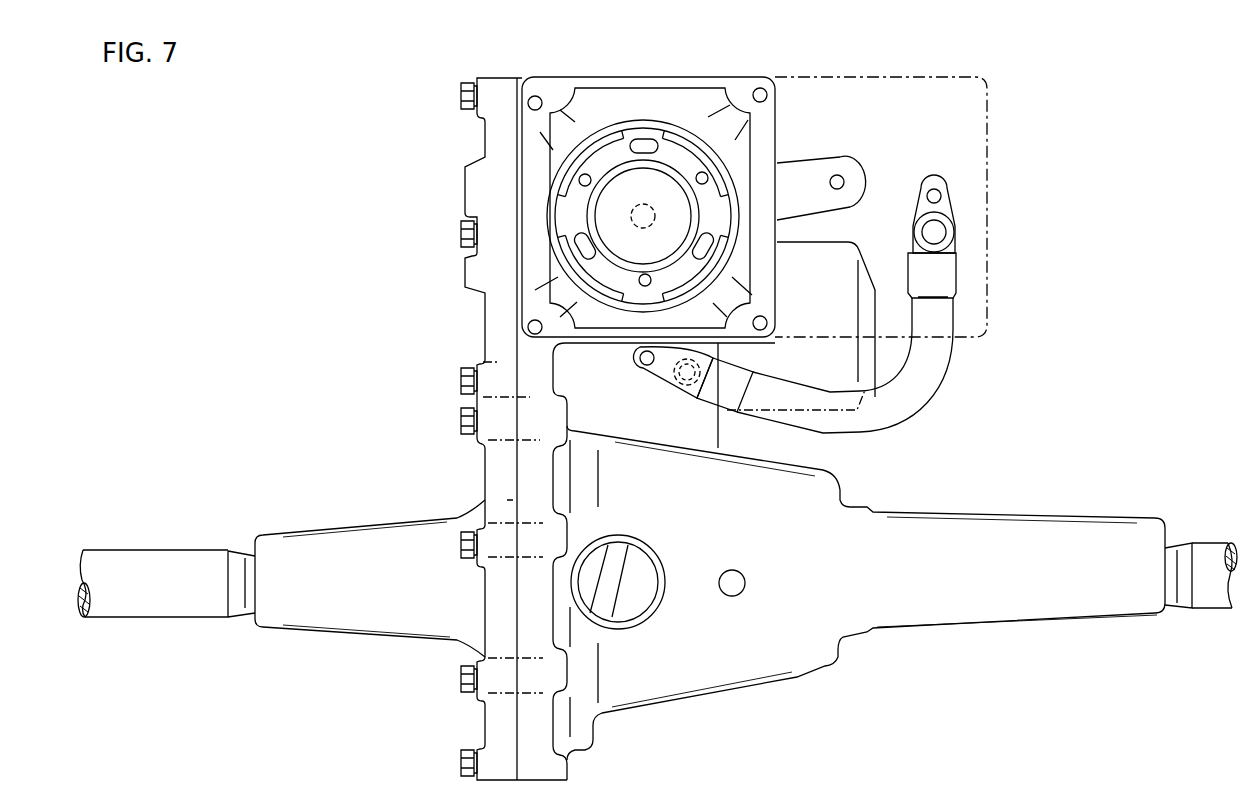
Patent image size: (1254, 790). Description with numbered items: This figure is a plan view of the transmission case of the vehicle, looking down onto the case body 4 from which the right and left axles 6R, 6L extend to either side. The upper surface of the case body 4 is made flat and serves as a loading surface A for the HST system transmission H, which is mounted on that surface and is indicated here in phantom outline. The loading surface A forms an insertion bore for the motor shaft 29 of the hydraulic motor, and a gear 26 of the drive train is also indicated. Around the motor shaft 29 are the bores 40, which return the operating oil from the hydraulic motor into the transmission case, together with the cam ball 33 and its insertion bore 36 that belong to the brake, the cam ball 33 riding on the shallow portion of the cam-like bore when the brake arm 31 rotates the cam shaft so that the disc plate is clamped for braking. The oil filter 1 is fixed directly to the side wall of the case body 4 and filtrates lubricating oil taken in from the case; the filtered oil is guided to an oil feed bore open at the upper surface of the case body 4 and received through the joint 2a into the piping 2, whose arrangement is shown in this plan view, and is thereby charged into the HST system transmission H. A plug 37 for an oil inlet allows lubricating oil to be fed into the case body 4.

The loading surface A is at (653, 100).
The HST system transmission H is at (988, 158).
The oil filter 1 is at (860, 257).
The piping 2 is at (917, 388).
The joint 2a is at (668, 389).
The case body 4 is at (725, 685).
The right axle 6R is at (187, 609).
The left axle 6L is at (1207, 604).
The gear 26 is at (956, 220).
The motor shaft 29 is at (643, 228).
The brake arm 31 is at (840, 164).
The cam ball 33 is at (585, 174).
The insertion bore 36 is at (663, 178).
The plug 37 is at (661, 595).
The bores 40 is at (646, 145).